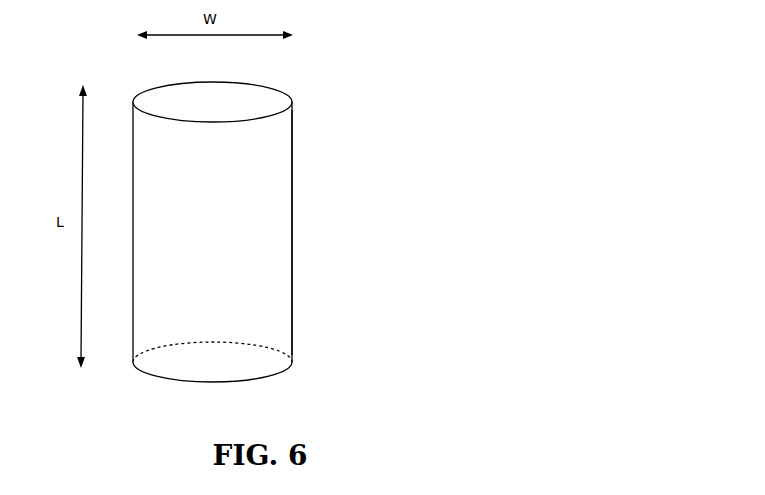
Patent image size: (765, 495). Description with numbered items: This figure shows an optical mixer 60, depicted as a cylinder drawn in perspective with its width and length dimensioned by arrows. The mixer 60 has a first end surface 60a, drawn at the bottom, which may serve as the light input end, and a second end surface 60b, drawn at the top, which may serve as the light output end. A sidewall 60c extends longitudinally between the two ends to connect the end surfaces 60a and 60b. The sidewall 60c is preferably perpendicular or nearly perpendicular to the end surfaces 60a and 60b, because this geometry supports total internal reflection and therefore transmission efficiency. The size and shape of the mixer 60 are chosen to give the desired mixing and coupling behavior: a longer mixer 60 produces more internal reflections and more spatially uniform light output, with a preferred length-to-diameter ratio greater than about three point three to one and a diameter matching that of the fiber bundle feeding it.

The optical mixer 60 is at (284, 214).
The first end surface 60a is at (245, 365).
The second end surface 60b is at (255, 97).
The sidewall 60c is at (293, 283).